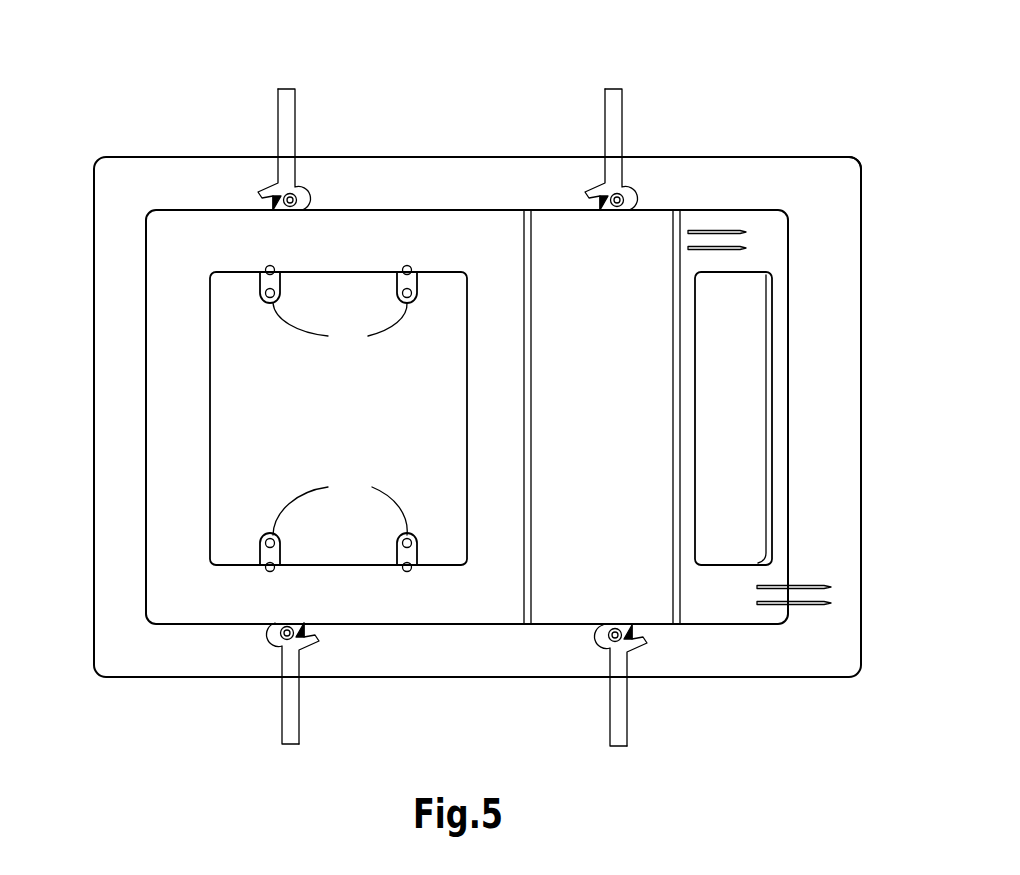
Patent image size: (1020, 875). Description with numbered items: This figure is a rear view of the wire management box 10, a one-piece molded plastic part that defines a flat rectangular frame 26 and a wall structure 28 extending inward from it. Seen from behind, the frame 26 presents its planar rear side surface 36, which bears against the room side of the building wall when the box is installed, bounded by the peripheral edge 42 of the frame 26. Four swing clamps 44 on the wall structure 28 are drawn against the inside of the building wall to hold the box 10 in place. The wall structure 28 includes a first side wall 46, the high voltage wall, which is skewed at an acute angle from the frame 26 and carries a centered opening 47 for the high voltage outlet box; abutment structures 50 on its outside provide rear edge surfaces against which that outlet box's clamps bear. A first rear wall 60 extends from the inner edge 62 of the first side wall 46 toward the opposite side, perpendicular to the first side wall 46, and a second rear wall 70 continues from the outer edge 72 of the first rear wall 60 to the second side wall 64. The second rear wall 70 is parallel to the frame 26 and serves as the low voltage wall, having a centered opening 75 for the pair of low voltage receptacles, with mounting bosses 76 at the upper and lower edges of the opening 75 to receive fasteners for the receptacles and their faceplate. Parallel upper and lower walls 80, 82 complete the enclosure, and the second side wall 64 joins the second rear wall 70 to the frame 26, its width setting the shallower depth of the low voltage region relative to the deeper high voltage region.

The wire management box 10 is at (716, 116).
The frame 26 is at (507, 157).
The wall structure 28 is at (438, 210).
The rear side surface 36 is at (840, 197).
The peripheral edge 42 is at (782, 153).
The swing clamps 44 is at (287, 92).
The first side wall 46 is at (782, 397).
The opening 47 is at (757, 450).
The abutment structures 50 is at (746, 232).
The first rear wall 60 is at (642, 590).
The inner edge 62 is at (677, 425).
The second side wall 64 is at (146, 506).
The second rear wall 70 is at (441, 595).
The outer edge 72 is at (527, 317).
The opening 75 is at (360, 552).
The mounting bosses 76 is at (340, 419).
The upper wall 80 is at (364, 210).
The lower wall 82 is at (187, 624).